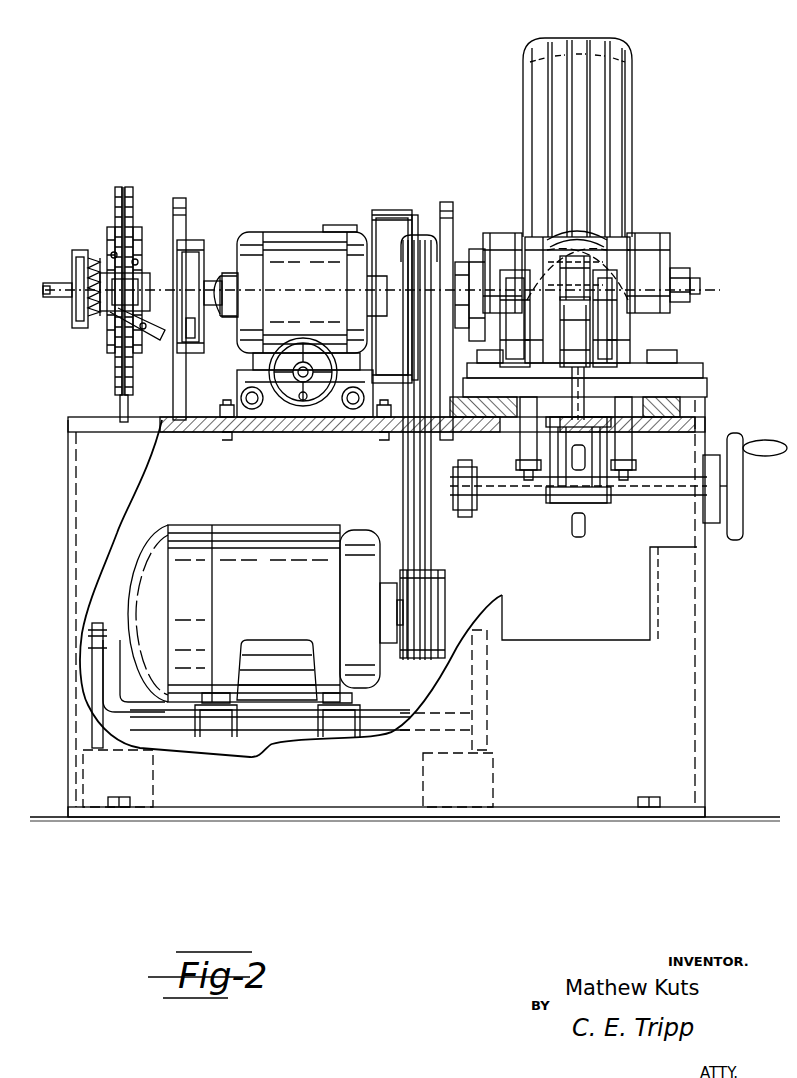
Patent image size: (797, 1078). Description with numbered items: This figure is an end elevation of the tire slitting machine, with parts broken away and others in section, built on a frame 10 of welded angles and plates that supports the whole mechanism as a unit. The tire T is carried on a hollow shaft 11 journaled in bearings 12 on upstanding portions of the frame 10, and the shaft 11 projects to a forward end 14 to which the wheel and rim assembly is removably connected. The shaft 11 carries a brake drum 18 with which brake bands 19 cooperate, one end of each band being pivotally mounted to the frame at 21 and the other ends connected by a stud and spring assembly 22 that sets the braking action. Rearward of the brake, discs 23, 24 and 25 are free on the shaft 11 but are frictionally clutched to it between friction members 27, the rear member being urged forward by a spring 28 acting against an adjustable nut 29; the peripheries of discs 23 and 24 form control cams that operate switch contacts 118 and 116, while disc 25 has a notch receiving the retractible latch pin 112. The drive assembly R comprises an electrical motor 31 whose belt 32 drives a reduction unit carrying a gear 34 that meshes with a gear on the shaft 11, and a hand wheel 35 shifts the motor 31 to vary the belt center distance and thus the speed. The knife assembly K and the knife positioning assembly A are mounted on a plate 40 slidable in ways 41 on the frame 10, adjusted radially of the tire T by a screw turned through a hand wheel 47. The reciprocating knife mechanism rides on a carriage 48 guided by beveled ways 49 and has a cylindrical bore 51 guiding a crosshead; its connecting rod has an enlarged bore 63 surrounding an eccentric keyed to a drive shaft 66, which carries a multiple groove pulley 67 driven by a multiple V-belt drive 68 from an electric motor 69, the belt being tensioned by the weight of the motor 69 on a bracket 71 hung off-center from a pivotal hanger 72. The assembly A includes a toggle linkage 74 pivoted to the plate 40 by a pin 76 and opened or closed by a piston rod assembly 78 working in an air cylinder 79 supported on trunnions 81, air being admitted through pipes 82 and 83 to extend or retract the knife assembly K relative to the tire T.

The frame 10 is at (710, 762).
The hollow shaft 11 is at (206, 280).
The bearings 12 is at (173, 232).
The shaft 14 is at (56, 286).
The brake drum 18 is at (377, 274).
The brake shoes or bands 19 is at (400, 253).
The pivotal mounting 21 is at (305, 351).
The stud and spring assembly 22 is at (418, 213).
The disc 23 is at (131, 192).
The disc 24 is at (117, 187).
The disc 25 is at (128, 187).
The friction members 27 is at (108, 228).
The spring 28 is at (88, 258).
The adjustable nut 29 is at (72, 252).
The electrical motor 31 is at (312, 280).
The belt 32 is at (192, 242).
The gear 34 is at (330, 226).
The hand wheel 35 is at (272, 377).
The plate 40 is at (668, 384).
The ways 41 is at (685, 388).
The hand wheel 47 is at (737, 463).
The base or carriage 48 is at (672, 366).
The beveled ways 49 is at (487, 363).
The cylindrical bore 51 is at (573, 230).
The enlarged bore 63 is at (593, 248).
The drive shaft 66 is at (690, 290).
The multiple groove pulley 67 is at (463, 251).
The multiple V-belt drive 68 is at (430, 500).
The electric motor 69 is at (295, 545).
The bracket 71 is at (268, 755).
The pivotal support or hanger 72 is at (88, 640).
The toggle linkage 74 is at (523, 304).
The pin 76 is at (598, 348).
The piston rod assembly 78 is at (588, 308).
The air cylinder 79 is at (575, 492).
The trunnions 81 is at (630, 465).
The air supply pipe 82 is at (555, 508).
The air supply pipe 83 is at (572, 525).
The latch pin 112 is at (120, 410).
The switch contact 116 is at (118, 290).
The switch contact 118 is at (152, 337).
The tire T is at (634, 55).
The knife assembly K is at (594, 222).
The drive assembly R is at (338, 212).
The knife positioning assembly A is at (602, 540).